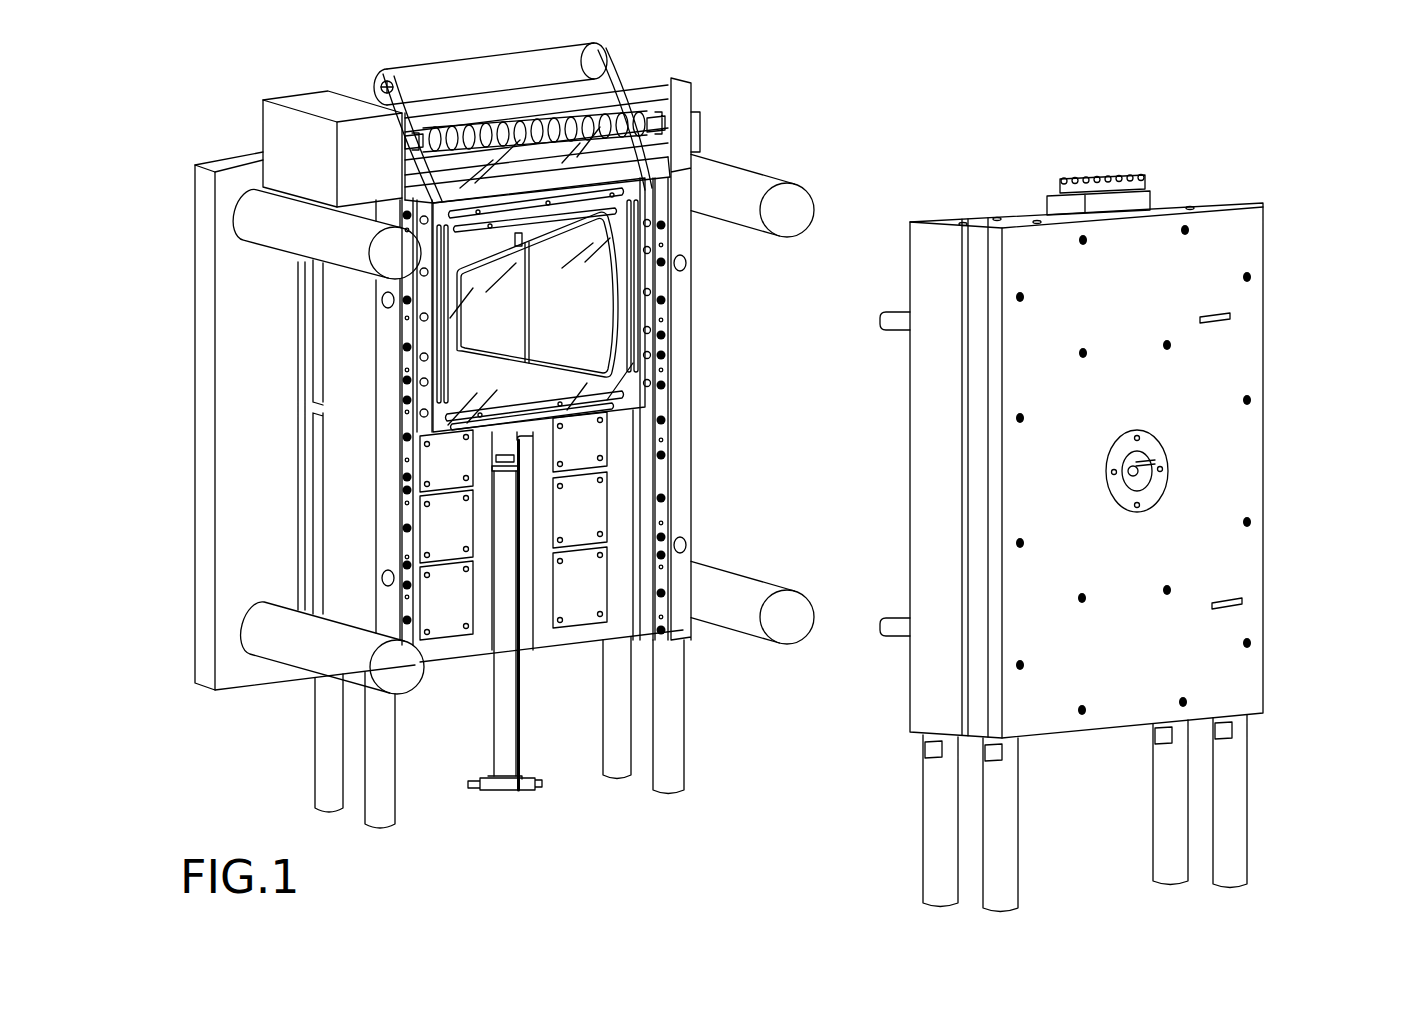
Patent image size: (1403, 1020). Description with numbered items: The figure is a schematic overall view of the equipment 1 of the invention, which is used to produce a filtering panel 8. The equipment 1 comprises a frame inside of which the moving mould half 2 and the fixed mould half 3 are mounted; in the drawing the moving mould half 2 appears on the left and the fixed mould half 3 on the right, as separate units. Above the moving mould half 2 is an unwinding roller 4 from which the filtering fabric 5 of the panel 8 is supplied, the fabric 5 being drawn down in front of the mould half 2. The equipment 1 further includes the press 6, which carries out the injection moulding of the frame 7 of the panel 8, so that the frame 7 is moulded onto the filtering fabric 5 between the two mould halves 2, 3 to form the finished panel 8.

The equipment 1 is at (940, 77).
The moving mould half 2 is at (357, 505).
The fixed mould half 3 is at (1203, 540).
The unwinding roller 4 is at (380, 73).
The filtering fabric 5 is at (587, 267).
The press 6 is at (270, 238).
The frame 7 is at (605, 376).
The panel 8 is at (575, 288).